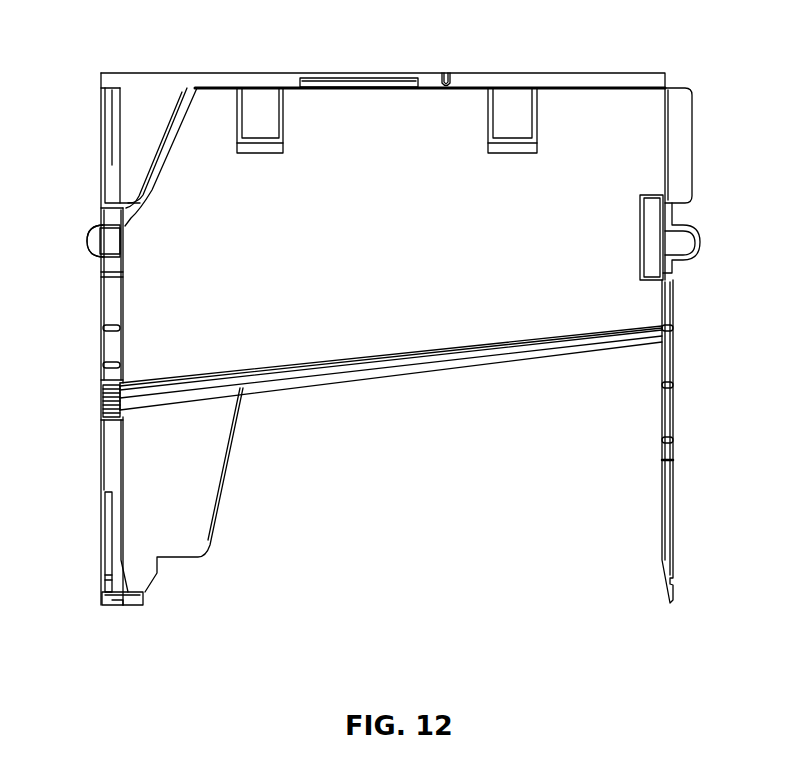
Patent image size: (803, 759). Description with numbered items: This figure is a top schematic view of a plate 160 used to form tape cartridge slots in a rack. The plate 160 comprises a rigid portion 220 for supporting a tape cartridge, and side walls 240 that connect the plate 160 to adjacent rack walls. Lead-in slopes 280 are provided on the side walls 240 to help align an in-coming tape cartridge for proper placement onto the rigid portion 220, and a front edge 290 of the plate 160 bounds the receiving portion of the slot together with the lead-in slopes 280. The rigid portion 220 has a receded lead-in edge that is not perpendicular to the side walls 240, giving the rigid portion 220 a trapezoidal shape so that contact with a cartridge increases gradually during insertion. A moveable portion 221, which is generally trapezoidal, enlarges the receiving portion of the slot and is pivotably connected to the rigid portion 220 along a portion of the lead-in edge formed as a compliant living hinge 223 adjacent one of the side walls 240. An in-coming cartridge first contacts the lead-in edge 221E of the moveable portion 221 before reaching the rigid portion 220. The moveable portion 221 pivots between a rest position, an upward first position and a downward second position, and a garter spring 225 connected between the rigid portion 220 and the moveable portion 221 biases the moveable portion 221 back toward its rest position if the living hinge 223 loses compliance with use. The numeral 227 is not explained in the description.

The plate 160 is at (212, 42).
The side walls 240 is at (102, 350).
The garter spring 225 is at (108, 398).
The rigid portion 220 is at (410, 325).
The living hinge 223 is at (177, 393).
The moveable portion 221 is at (198, 490).
The lead-in edge of the moveable portion 221E is at (232, 440).
The lead-in slopes 280 is at (123, 577).
The inner slot 227 is at (103, 590).
The front edge 290 is at (123, 608).